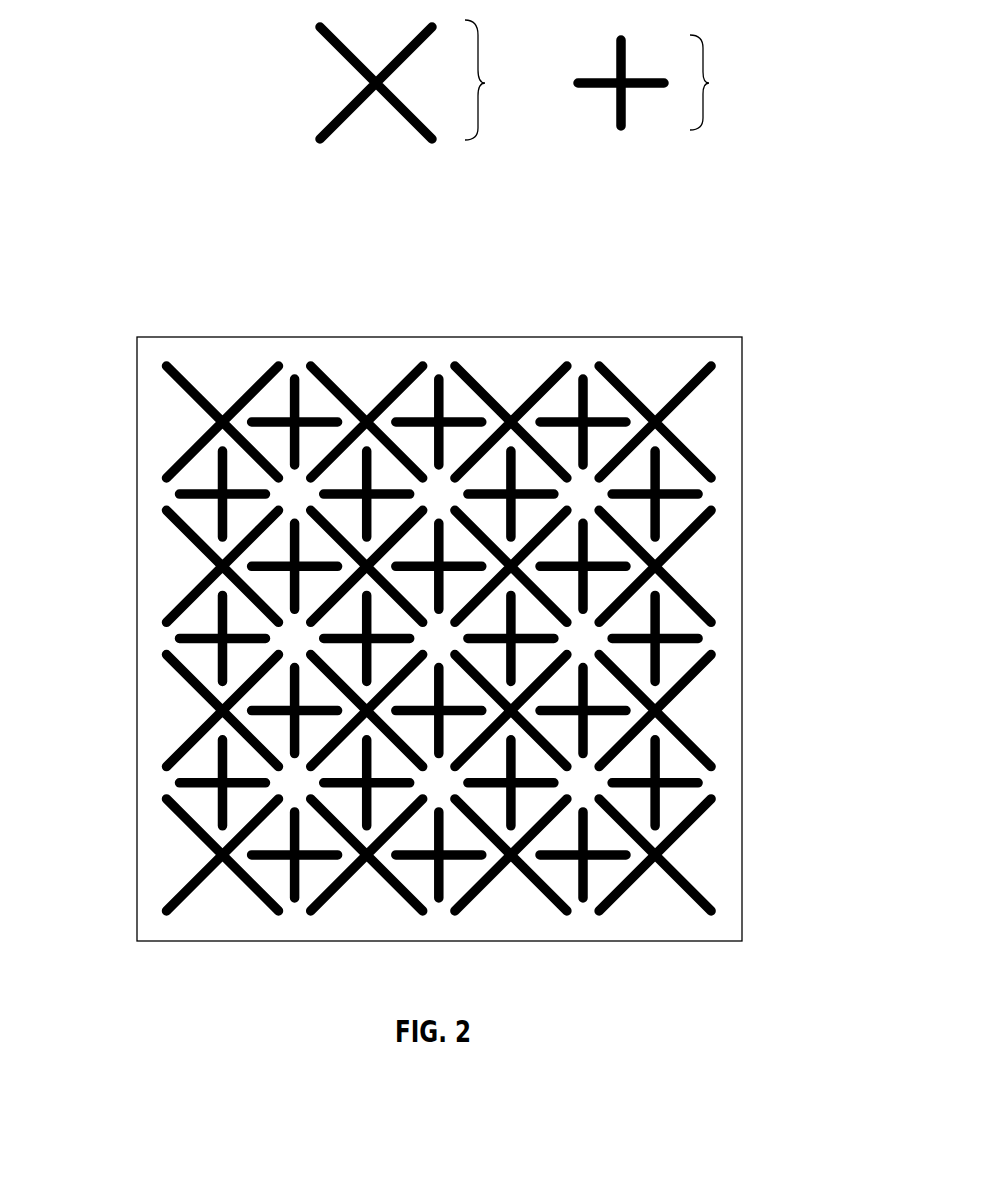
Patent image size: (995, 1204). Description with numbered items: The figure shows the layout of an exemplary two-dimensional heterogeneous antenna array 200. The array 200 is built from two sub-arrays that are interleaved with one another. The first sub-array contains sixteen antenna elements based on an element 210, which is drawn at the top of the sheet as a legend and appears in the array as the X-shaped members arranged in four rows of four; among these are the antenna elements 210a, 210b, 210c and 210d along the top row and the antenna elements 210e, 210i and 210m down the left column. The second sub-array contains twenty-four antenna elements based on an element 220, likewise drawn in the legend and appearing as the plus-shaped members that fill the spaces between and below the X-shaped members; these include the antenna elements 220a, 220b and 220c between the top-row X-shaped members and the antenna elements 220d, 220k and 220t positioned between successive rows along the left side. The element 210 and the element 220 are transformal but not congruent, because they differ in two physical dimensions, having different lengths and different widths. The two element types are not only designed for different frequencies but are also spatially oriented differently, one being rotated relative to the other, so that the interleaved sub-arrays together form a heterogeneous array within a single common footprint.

The array 200 is at (117, 256).
The element 210 is at (426, 80).
The element 220 is at (668, 82).
The antenna element 210a is at (195, 395).
The antenna element 210b is at (338, 392).
The antenna element 210c is at (483, 392).
The antenna element 210d is at (626, 390).
The antenna element 210e is at (190, 543).
The antenna element 210i is at (190, 690).
The antenna element 210m is at (190, 830).
The antenna element 220a is at (300, 378).
The antenna element 220b is at (449, 377).
The antenna element 220c is at (592, 372).
The antenna element 220d is at (177, 496).
The antenna element 220k is at (177, 638).
The antenna element 220t is at (175, 786).